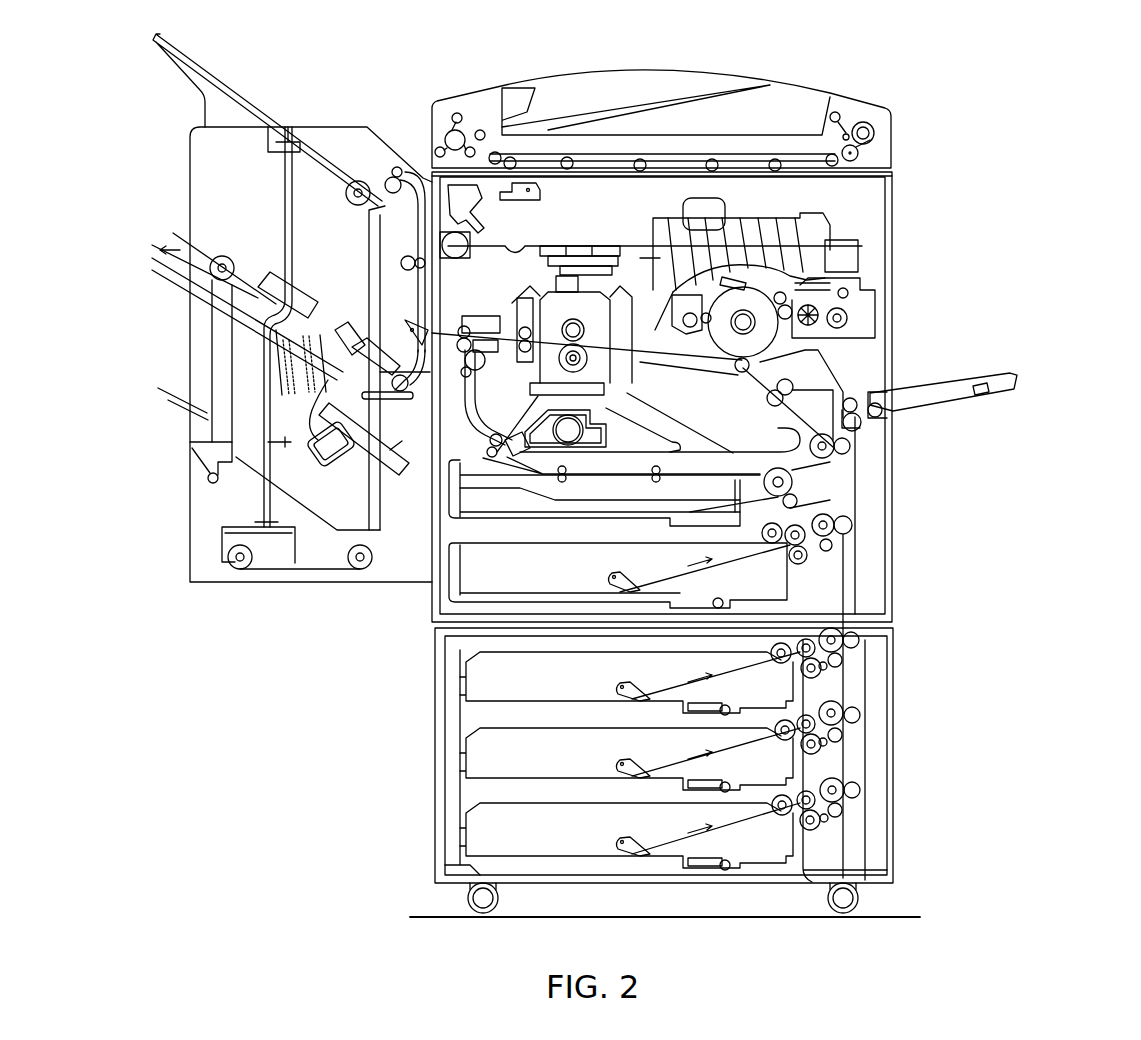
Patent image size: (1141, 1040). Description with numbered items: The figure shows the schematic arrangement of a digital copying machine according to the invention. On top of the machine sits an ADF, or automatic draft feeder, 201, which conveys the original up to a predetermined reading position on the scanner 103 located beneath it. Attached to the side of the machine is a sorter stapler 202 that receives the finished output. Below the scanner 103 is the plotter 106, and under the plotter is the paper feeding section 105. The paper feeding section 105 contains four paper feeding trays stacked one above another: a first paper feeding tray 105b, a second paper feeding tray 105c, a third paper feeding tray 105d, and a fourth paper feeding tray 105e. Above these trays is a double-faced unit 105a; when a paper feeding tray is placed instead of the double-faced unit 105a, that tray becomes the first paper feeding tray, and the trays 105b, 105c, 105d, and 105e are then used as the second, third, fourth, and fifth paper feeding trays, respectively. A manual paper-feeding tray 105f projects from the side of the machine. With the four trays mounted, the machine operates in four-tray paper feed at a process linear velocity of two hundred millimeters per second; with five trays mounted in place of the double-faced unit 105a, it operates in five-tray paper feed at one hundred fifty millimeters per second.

The ADF (automatic draft feeder) 201 is at (857, 92).
The sorter stapler 202 is at (362, 120).
The scanner 103 is at (887, 217).
The plotter 106 is at (909, 321).
The paper feeding section 105 is at (967, 842).
The double-faced unit 105a is at (817, 492).
The first paper feeding tray 105b is at (792, 583).
The second paper feeding tray 105c is at (788, 690).
The third paper feeding tray 105d is at (782, 767).
The fourth paper feeding tray 105e is at (780, 842).
The manual paper-feeding tray 105f is at (1000, 393).